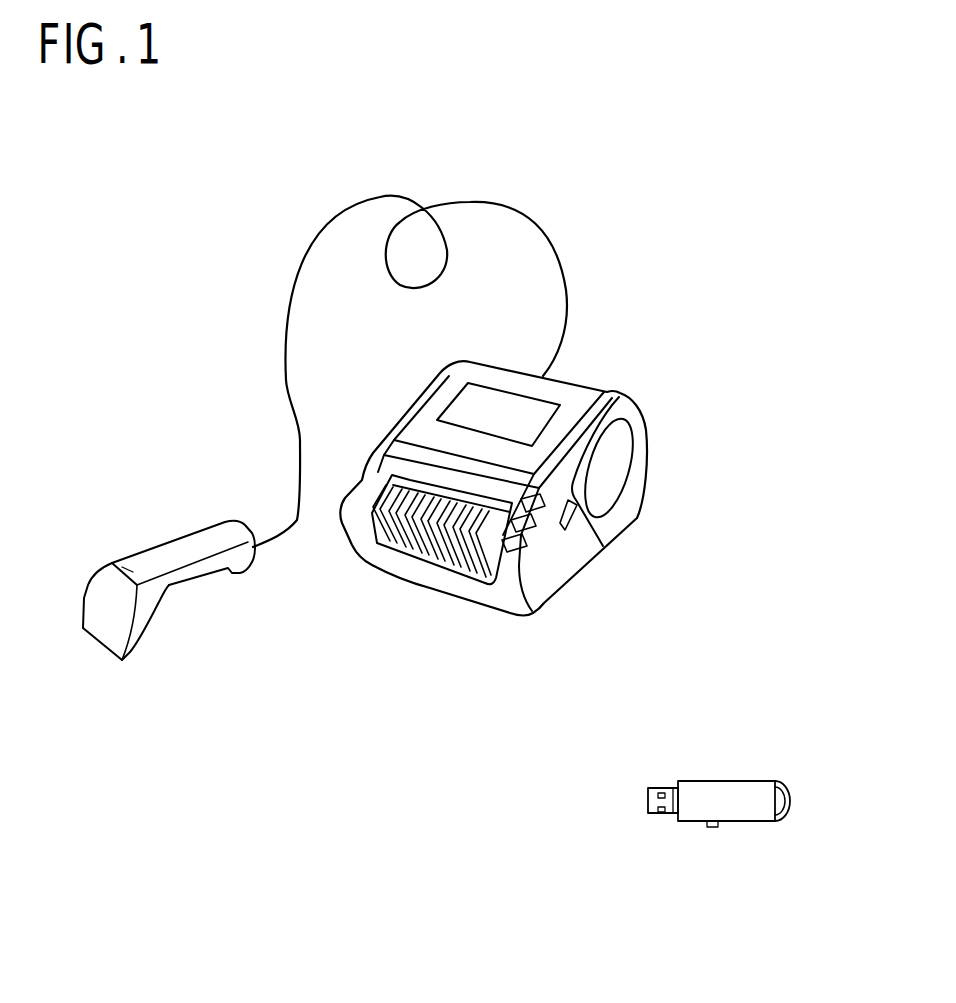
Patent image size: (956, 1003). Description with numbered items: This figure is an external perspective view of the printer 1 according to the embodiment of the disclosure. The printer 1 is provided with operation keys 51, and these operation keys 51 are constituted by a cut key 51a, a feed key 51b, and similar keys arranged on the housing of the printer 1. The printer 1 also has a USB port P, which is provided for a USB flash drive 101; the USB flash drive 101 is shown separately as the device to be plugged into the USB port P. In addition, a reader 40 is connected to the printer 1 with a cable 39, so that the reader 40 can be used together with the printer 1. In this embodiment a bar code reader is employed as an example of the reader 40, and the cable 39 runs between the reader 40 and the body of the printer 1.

The printer 1 is at (640, 403).
The cable 39 is at (557, 257).
The reader 40 is at (168, 548).
The operation keys 51 is at (605, 587).
The cut key 51a is at (532, 530).
The feed key 51b is at (518, 548).
The USB port P is at (577, 517).
The USB flash drive 101 is at (739, 780).